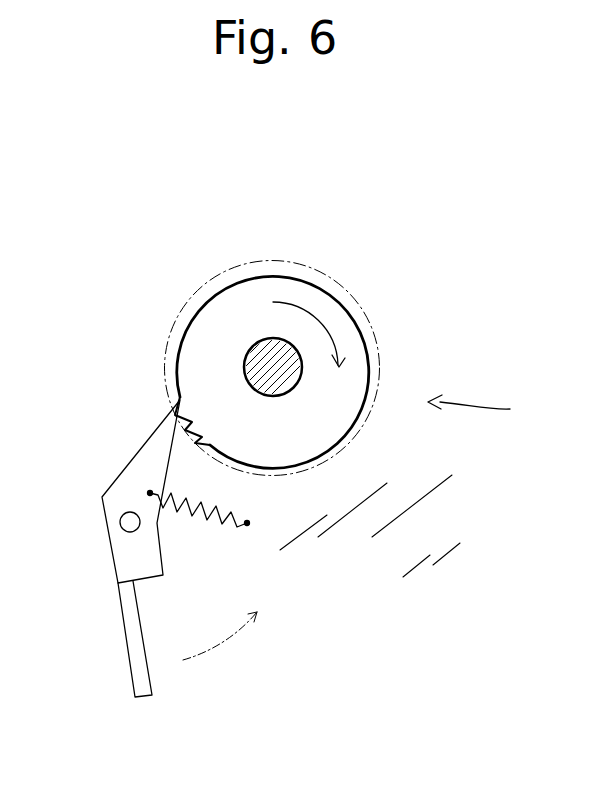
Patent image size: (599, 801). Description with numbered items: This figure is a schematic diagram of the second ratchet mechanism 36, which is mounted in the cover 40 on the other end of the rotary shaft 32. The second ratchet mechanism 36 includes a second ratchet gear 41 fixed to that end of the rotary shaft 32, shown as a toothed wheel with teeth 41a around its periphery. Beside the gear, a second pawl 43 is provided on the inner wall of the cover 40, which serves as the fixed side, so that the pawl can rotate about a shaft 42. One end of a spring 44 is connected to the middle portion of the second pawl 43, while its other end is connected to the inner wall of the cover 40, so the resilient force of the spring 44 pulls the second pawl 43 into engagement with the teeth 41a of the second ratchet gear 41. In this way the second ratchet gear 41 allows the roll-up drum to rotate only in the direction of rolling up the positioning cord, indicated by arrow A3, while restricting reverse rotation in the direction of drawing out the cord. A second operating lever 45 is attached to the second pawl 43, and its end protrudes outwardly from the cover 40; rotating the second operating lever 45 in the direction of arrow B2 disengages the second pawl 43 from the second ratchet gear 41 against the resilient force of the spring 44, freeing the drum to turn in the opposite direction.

The rotary shaft 32 is at (293, 382).
The second ratchet mechanism 36 is at (490, 412).
The cover 40 is at (352, 537).
The second ratchet gear 41 is at (347, 377).
The teeth 41a is at (187, 430).
The shaft 42 is at (121, 522).
The second pawl 43 is at (125, 493).
The spring 44 is at (213, 517).
The second operating lever 45 is at (117, 627).
The direction of arrow A3 is at (308, 312).
The direction of arrow B2 is at (227, 642).